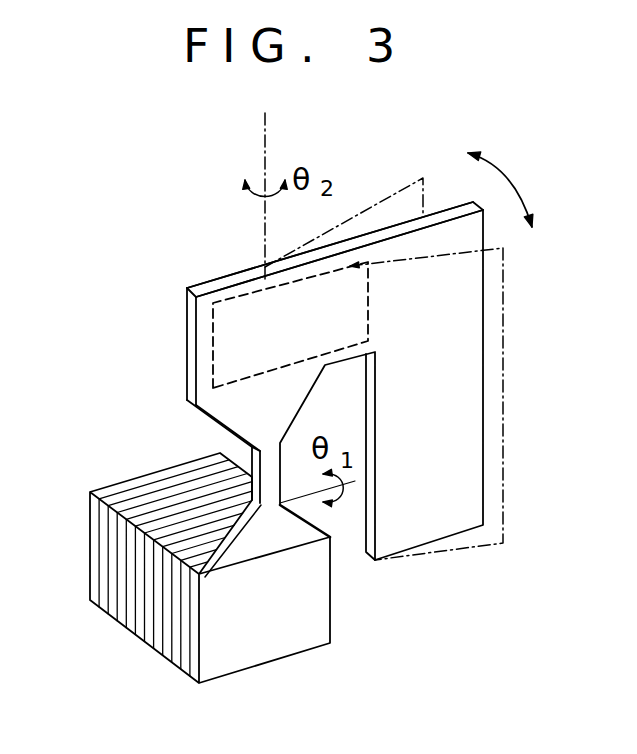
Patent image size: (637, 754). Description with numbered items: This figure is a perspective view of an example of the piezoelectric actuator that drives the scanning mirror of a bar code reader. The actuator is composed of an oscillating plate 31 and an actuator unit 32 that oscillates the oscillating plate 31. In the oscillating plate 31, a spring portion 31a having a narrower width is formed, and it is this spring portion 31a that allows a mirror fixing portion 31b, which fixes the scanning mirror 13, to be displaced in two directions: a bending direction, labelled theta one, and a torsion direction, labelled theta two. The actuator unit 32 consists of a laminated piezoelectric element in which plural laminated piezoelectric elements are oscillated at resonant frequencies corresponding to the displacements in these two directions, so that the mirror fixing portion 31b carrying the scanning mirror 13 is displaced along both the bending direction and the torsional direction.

The scanning mirror 13 is at (225, 322).
The oscillating plate 31 is at (445, 472).
The spring portion 31a is at (256, 460).
The mirror fixing portion 31b is at (387, 293).
The actuator unit 32 is at (113, 553).